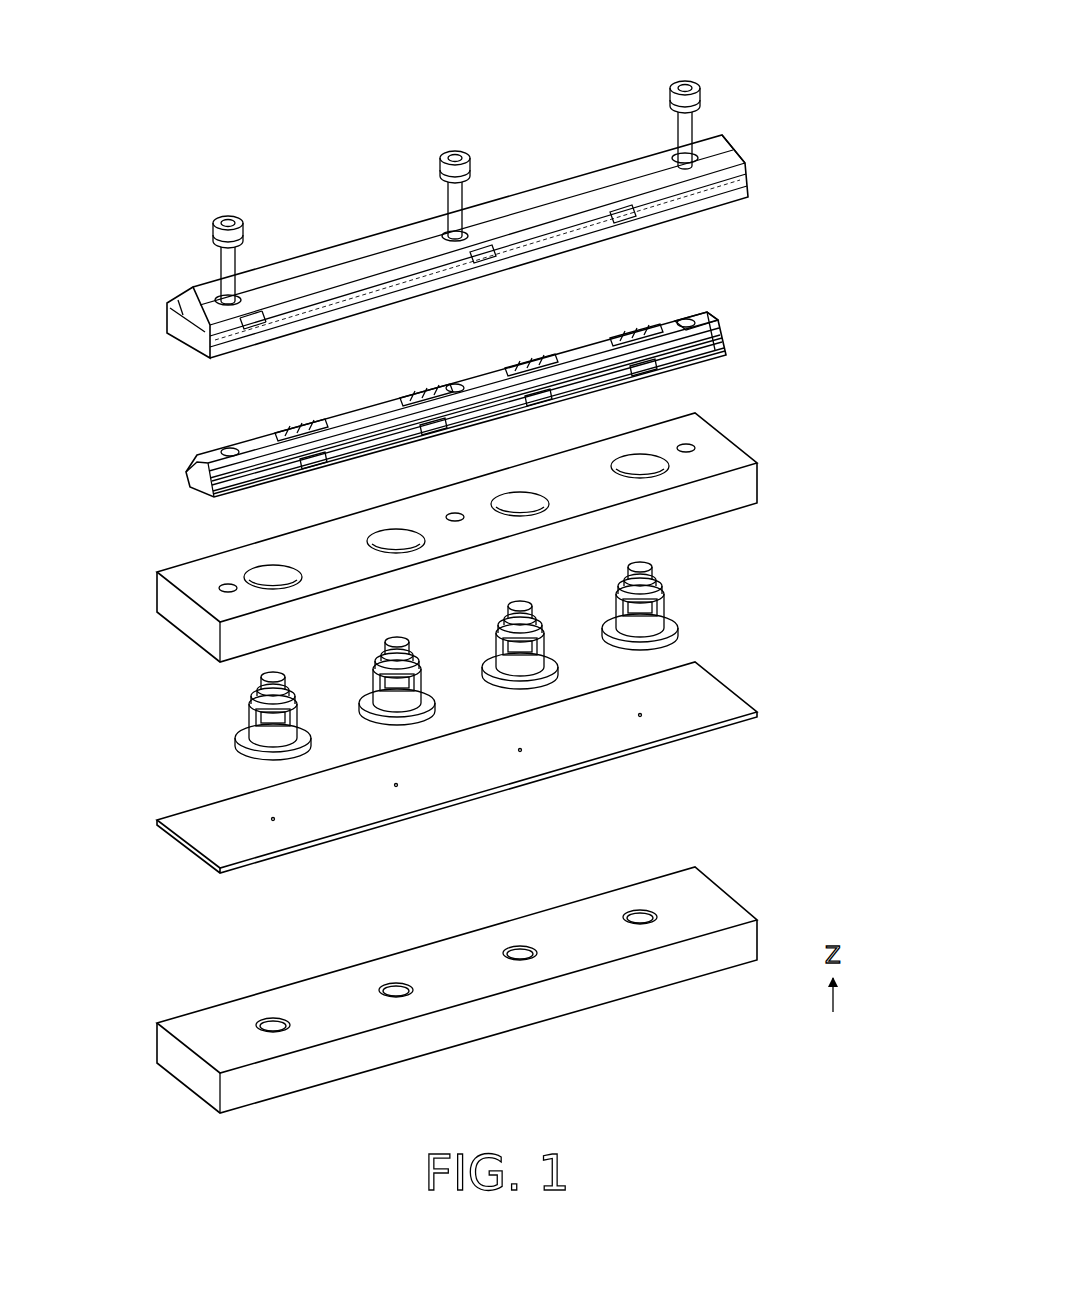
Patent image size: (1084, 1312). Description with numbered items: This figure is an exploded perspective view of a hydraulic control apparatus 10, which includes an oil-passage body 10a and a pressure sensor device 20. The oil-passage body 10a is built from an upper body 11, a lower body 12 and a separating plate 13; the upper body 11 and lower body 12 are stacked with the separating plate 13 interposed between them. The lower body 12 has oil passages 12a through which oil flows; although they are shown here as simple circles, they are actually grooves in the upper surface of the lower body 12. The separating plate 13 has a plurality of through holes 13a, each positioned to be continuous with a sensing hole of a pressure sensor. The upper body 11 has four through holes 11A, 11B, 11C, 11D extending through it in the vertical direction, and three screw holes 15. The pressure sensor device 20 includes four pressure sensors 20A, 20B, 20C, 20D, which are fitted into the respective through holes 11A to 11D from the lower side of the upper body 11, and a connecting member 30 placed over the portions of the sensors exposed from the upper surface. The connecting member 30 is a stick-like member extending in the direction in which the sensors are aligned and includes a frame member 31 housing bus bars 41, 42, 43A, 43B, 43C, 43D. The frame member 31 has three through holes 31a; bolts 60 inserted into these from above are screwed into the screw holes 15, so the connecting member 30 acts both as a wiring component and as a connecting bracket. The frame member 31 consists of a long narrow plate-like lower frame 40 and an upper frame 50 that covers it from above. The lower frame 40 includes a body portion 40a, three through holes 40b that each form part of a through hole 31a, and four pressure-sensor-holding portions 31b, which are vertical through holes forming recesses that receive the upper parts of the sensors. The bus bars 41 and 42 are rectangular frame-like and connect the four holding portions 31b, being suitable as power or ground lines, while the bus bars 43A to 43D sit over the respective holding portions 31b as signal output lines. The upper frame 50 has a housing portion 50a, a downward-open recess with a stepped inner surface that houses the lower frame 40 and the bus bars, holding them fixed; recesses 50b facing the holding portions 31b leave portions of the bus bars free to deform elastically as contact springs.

The hydraulic control apparatus 10 is at (772, 96).
The oil-passage body 10a is at (826, 435).
The upper body 11 is at (750, 481).
The through hole 11A is at (220, 560).
The through hole 11B is at (372, 532).
The through hole 11C is at (498, 495).
The through hole 11D is at (616, 455).
The lower body 12 is at (705, 895).
The oil passage 12a is at (262, 1016).
The separating plate 13 is at (712, 690).
The through hole 13a is at (273, 819).
The screw hole 15 is at (216, 585).
The pressure sensor device 20 is at (589, 160).
The pressure sensor 20A is at (250, 709).
The pressure sensor 20B is at (375, 671).
The pressure sensor 20C is at (495, 640).
The pressure sensor 20D is at (618, 600).
The connecting member 30 is at (748, 147).
The frame member 31 is at (826, 155).
The through hole 31a is at (214, 282).
The pressure-sensor-holding portion 31b is at (555, 350).
The lower frame 40 is at (728, 345).
The body portion 40a is at (700, 313).
The through hole 40b is at (686, 314).
The bus bar 41 is at (592, 354).
The bus bar 42 is at (612, 389).
The bus bar 43A is at (276, 440).
The bus bar 43B is at (356, 412).
The bus bar 43C is at (487, 368).
The bus bar 43D is at (605, 338).
The upper frame 50 is at (752, 190).
The housing portion 50a is at (186, 326).
The recess 50b is at (268, 282).
The bolt 60 is at (229, 216).